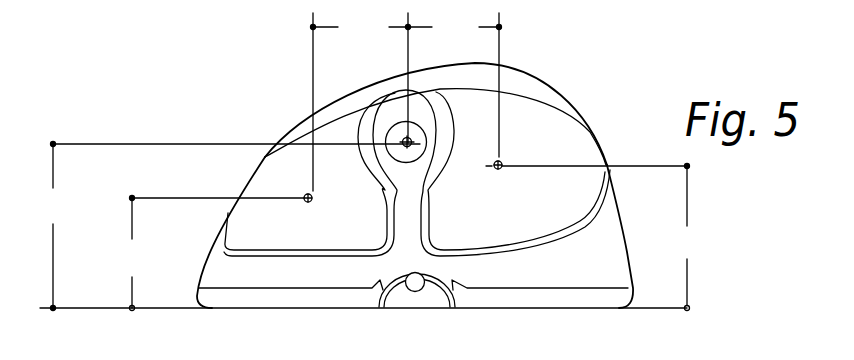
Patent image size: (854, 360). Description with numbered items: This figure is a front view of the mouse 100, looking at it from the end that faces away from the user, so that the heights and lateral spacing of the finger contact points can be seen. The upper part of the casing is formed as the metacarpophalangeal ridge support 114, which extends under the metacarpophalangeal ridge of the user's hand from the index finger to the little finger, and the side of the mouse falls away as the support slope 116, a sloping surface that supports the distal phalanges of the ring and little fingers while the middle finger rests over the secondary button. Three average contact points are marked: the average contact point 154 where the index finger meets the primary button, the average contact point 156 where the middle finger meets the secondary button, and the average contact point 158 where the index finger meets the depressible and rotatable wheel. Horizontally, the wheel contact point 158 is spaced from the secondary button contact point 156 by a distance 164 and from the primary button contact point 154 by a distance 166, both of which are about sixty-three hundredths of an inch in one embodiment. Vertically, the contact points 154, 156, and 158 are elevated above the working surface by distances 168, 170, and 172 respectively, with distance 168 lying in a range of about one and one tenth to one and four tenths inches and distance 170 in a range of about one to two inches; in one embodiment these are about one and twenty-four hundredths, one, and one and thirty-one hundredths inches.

The mouse 100 is at (229, 121).
The metacarpophalangeal ridge support 114 is at (540, 72).
The support slope 116 is at (203, 264).
The average contact point 154 is at (503, 163).
The average contact point 156 is at (304, 196).
The average contact point 158 is at (404, 139).
The distance 164 is at (361, 99).
The distance 166 is at (455, 82).
The distance 168 is at (606, 237).
The distance 170 is at (208, 253).
The distance 172 is at (225, 226).